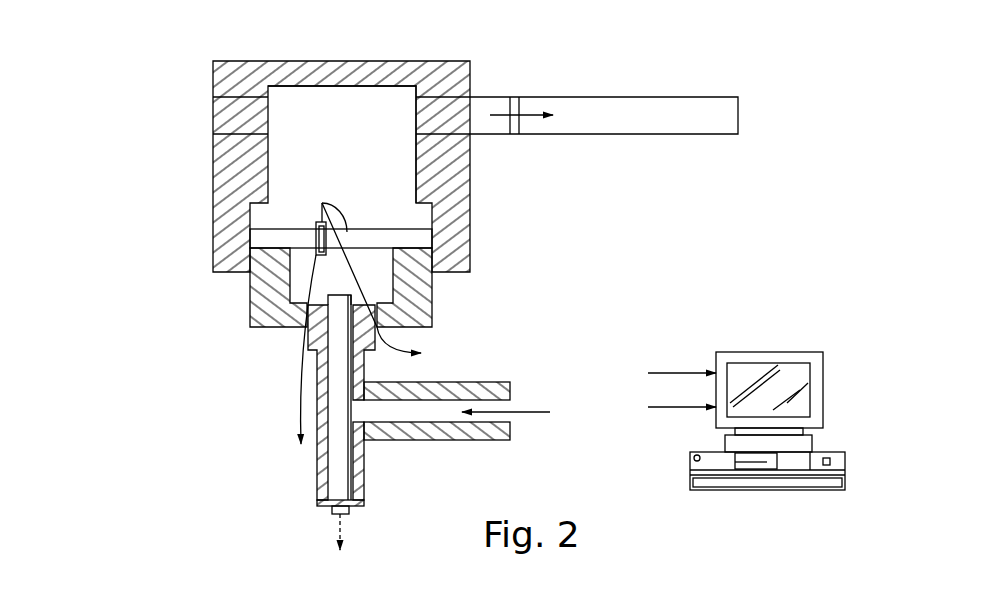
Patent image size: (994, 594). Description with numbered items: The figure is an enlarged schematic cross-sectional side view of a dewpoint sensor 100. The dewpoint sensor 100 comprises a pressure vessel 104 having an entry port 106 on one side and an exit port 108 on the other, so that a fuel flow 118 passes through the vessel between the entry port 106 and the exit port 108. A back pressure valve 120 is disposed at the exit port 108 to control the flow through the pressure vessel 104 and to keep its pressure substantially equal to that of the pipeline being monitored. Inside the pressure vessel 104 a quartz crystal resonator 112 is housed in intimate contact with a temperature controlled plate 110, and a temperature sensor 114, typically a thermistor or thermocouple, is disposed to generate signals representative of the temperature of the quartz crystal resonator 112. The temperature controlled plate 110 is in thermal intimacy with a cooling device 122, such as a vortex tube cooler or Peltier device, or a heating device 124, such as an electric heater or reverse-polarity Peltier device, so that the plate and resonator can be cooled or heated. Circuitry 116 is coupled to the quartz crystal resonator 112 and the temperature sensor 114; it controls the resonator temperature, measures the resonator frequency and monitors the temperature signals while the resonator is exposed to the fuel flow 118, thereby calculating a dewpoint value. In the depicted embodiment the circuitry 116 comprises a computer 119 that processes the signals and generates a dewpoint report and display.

The dewpoint sensor 100 is at (183, 32).
The pressure vessel 104 is at (320, 67).
The entry port 106 is at (235, 115).
The exit port 108 is at (441, 114).
The temperature controlled plate 110 is at (418, 246).
The quartz crystal resonator 112 is at (374, 227).
The temperature sensor 114 is at (312, 237).
The circuitry 116 is at (493, 339).
The fuel flow 118 is at (555, 122).
The computer 119 is at (777, 358).
The back pressure valve 120 is at (515, 92).
The cooling device 122 is at (331, 468).
The heating device 124 is at (347, 482).